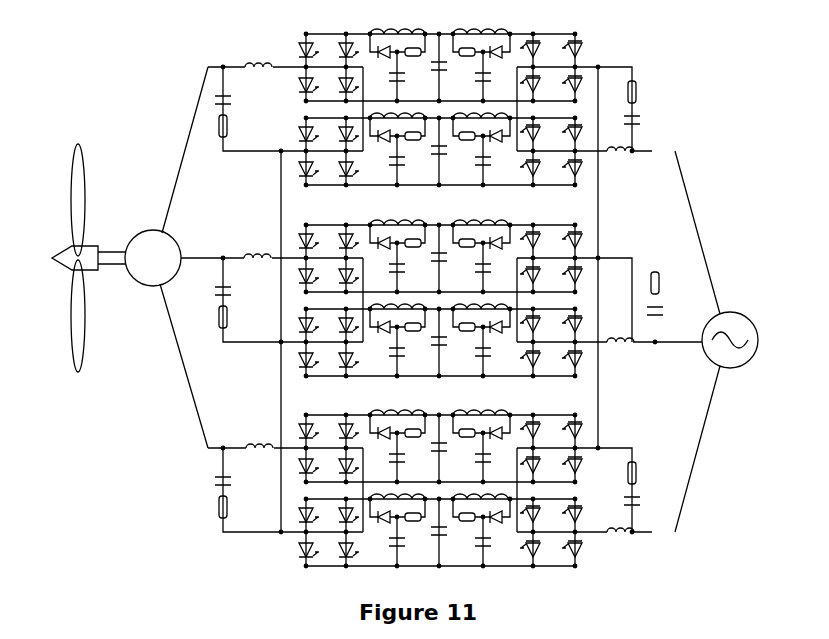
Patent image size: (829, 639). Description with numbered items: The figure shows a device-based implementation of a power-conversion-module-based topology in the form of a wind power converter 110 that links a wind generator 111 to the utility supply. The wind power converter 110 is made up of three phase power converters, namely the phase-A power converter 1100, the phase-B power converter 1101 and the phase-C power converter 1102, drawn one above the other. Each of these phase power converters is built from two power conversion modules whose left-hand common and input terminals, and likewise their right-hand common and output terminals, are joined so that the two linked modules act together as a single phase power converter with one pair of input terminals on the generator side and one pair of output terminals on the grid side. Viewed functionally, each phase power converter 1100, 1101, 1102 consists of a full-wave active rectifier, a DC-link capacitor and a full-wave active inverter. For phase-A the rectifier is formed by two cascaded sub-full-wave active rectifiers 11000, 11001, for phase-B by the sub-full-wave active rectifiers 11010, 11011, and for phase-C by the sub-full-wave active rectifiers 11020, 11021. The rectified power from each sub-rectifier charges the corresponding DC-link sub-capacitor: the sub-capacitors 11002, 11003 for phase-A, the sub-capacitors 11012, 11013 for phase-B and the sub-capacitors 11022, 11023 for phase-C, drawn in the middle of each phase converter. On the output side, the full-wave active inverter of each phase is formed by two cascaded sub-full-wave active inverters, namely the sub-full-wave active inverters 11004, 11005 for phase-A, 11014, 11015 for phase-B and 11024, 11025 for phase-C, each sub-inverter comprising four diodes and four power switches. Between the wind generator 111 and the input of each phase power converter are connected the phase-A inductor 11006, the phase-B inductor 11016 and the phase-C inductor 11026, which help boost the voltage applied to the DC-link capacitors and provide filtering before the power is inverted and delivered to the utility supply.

The wind power converter 110 is at (741, 431).
The wind generator 111 is at (116, 258).
The phase-A power converter 1100 is at (431, 110).
The phase-B power converter 1101 is at (431, 301).
The phase-C power converter 1102 is at (431, 491).
The sub-full-wave active rectifier 11000 is at (331, 58).
The sub-full-wave active rectifier 11001 is at (331, 161).
The sub-capacitor 11002 is at (440, 58).
The sub-capacitor 11003 is at (440, 160).
The sub-full-wave active inverter 11004 is at (549, 58).
The sub-full-wave active inverter 11005 is at (549, 161).
The phase-A inductor 11006 is at (257, 98).
The sub-full-wave active rectifier 11010 is at (331, 250).
The sub-full-wave active rectifier 11011 is at (331, 352).
The sub-capacitor 11012 is at (440, 250).
The sub-capacitor 11013 is at (440, 350).
The sub-full-wave active inverter 11014 is at (549, 250).
The sub-full-wave active inverter 11015 is at (549, 352).
The phase-B inductor 11016 is at (243, 288).
The sub-full-wave active rectifier 11020 is at (331, 440).
The sub-full-wave active rectifier 11021 is at (331, 542).
The sub-capacitor 11022 is at (440, 440).
The sub-capacitor 11023 is at (440, 540).
The sub-full-wave active inverter 11024 is at (549, 440).
The sub-full-wave active inverter 11025 is at (549, 542).
The phase-C inductor 11026 is at (257, 476).